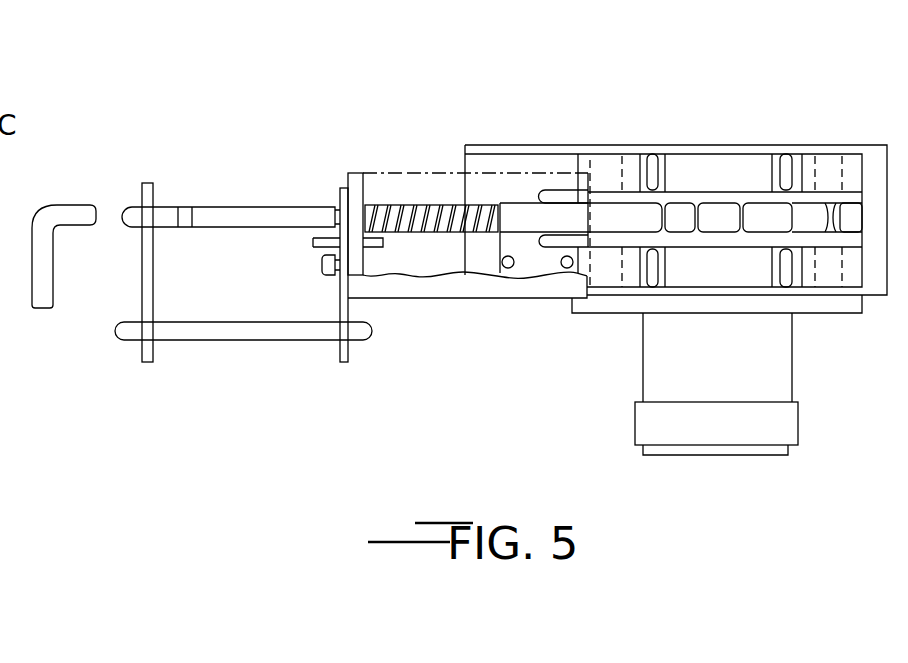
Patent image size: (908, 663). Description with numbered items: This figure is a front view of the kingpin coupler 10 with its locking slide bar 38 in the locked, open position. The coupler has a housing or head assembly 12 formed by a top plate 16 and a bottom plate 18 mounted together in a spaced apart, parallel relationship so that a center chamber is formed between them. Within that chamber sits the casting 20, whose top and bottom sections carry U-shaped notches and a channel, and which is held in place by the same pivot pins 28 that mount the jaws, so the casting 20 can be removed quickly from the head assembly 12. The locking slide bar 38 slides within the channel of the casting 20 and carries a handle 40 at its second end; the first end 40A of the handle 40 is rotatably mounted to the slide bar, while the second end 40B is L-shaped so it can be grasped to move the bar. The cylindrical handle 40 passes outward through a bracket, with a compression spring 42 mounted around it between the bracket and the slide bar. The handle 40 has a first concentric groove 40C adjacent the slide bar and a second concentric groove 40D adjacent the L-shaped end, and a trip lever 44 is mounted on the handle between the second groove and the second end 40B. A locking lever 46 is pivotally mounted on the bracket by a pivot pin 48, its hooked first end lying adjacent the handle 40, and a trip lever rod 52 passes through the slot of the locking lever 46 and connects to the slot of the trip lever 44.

The kingpin coupler 10 is at (680, 82).
The housing or head assembly 12 is at (752, 128).
The top plate 16 is at (696, 147).
The bottom plate 18 is at (826, 297).
The casting 20 is at (853, 160).
The pivot pins 28 is at (614, 148).
The locking slide bar 38 is at (517, 210).
The handle 40 is at (70, 206).
The first end of the handle 40A is at (490, 232).
The second end of the handle 40B is at (44, 308).
The first concentric groove 40C is at (342, 208).
The second concentric groove 40D is at (182, 207).
The spring 42 is at (412, 234).
The trip lever 44 is at (150, 362).
The locking lever 46 is at (340, 362).
The pivot pin 48 is at (322, 265).
The trip lever rod 52 is at (243, 340).